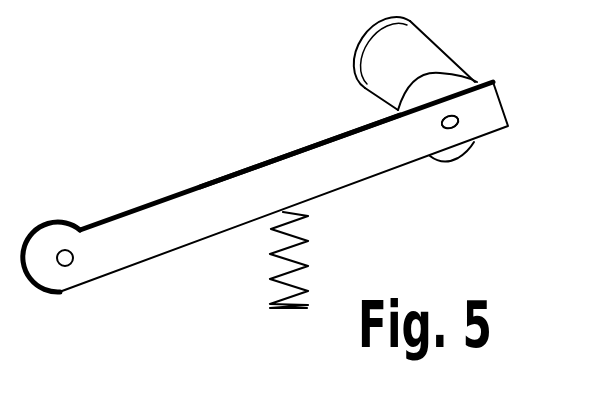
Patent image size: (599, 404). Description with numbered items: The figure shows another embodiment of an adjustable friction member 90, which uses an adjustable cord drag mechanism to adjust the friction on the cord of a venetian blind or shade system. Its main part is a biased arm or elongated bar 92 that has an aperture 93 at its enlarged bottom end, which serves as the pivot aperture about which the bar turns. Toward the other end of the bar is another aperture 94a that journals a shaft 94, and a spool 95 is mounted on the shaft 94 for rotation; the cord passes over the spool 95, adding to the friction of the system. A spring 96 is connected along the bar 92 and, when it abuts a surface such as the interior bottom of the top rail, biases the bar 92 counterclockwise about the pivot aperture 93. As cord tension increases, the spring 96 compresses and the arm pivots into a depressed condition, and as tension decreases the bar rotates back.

The adjustable friction member 90 is at (215, 175).
The elongated bar 92 is at (327, 151).
The aperture 93 is at (58, 256).
The shaft 94 is at (455, 128).
The aperture 94a is at (456, 118).
The spool 95 is at (445, 58).
The spring 96 is at (306, 262).